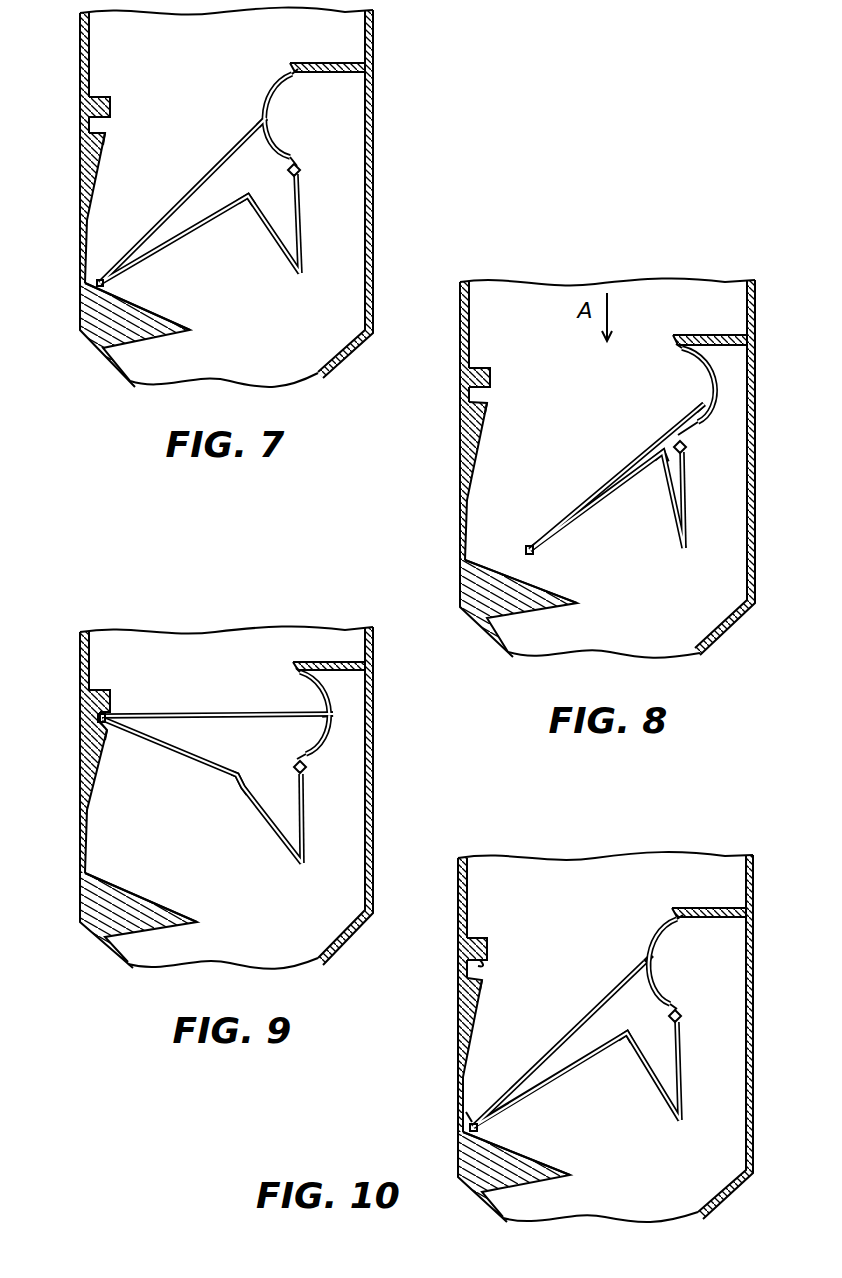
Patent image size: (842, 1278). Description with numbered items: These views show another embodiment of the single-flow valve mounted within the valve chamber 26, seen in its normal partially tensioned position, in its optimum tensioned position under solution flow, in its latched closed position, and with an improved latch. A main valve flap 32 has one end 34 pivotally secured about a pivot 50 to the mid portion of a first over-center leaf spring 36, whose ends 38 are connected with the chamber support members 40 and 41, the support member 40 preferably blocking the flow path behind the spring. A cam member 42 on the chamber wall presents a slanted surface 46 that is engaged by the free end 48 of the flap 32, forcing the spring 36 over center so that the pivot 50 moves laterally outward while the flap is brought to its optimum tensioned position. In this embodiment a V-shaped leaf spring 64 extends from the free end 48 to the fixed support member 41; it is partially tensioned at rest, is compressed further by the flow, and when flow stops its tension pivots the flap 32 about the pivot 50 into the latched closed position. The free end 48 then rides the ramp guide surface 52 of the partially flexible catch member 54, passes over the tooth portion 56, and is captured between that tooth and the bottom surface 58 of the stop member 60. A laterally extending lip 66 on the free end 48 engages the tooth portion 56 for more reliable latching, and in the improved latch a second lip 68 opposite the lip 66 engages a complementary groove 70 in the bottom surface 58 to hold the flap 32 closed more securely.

In FIG. 7, the valve chamber 26 is at (373, 130).
In FIG. 8, the valve chamber 26 is at (758, 524).
In FIG. 9, the valve chamber 26 is at (375, 827).
In FIG. 10, the valve chamber 26 is at (755, 962).
In FIG. 7, the main valve flap 32 is at (190, 166).
In FIG. 8, the main valve flap 32 is at (645, 451).
In FIG. 9, the main valve flap 32 is at (224, 765).
In FIG. 10, the main valve flap 32 is at (569, 1027).
In FIG. 7, the one end of main valve flap 34 is at (244, 137).
In FIG. 8, the one end of main valve flap 34 is at (689, 412).
In FIG. 9, the one end of main valve flap 34 is at (310, 707).
In FIG. 10, the one end of main valve flap 34 is at (627, 975).
In FIG. 7, the first over-center leaf spring 36 is at (275, 107).
In FIG. 8, the first over-center leaf spring 36 is at (718, 367).
In FIG. 9, the first over-center leaf spring 36 is at (333, 700).
In FIG. 10, the first over-center leaf spring 36 is at (655, 942).
In FIG. 7, the ends of leaf spring 38 is at (278, 82).
In FIG. 8, the ends of leaf spring 38 is at (682, 352).
In FIG. 9, the ends of leaf spring 38 is at (330, 676).
In FIG. 10, the ends of leaf spring 38 is at (669, 926).
In FIG. 7, the support member 40 is at (322, 62).
In FIG. 8, the support member 40 is at (710, 335).
In FIG. 9, the support member 40 is at (330, 662).
In FIG. 10, the support member 40 is at (709, 908).
In FIG. 7, the support member 41 is at (303, 235).
In FIG. 8, the support member 41 is at (688, 532).
In FIG. 9, the support member 41 is at (305, 840).
In FIG. 10, the support member 41 is at (684, 1077).
In FIG. 7, the cam member 42 is at (98, 313).
In FIG. 8, the cam member 42 is at (480, 597).
In FIG. 9, the cam member 42 is at (100, 905).
In FIG. 10, the cam member 42 is at (477, 1152).
In FIG. 7, the slanted surface 46 is at (155, 315).
In FIG. 8, the slanted surface 46 is at (546, 590).
In FIG. 9, the slanted surface 46 is at (153, 905).
In FIG. 10, the slanted surface 46 is at (532, 1160).
In FIG. 7, the free end of valve flap 48 is at (115, 270).
In FIG. 8, the free end of valve flap 48 is at (549, 536).
In FIG. 9, the free end of valve flap 48 is at (140, 735).
In FIG. 10, the free end of valve flap 48 is at (489, 1114).
In FIG. 7, the pivot 50 is at (262, 118).
In FIG. 8, the pivot 50 is at (718, 390).
In FIG. 9, the pivot 50 is at (335, 715).
In FIG. 10, the pivot 50 is at (653, 964).
In FIG. 7, the ramp guide surface 52 is at (98, 166).
In FIG. 8, the ramp guide surface 52 is at (478, 452).
In FIG. 9, the ramp guide surface 52 is at (94, 786).
In FIG. 10, the ramp guide surface 52 is at (476, 1008).
In FIG. 7, the catch member 54 is at (87, 165).
In FIG. 8, the catch member 54 is at (468, 445).
In FIG. 9, the catch member 54 is at (86, 765).
In FIG. 10, the catch member 54 is at (468, 996).
In FIG. 7, the tooth portion 56 is at (108, 133).
In FIG. 8, the tooth portion 56 is at (488, 402).
In FIG. 9, the tooth portion 56 is at (108, 733).
In FIG. 10, the tooth portion 56 is at (482, 979).
In FIG. 7, the bottom surface of stop member 58 is at (112, 122).
In FIG. 8, the bottom surface of stop member 58 is at (492, 392).
In FIG. 9, the bottom surface of stop member 58 is at (110, 705).
In FIG. 10, the bottom surface of stop member 58 is at (468, 962).
In FIG. 7, the stop member 60 is at (100, 97).
In FIG. 8, the stop member 60 is at (480, 368).
In FIG. 9, the stop member 60 is at (97, 690).
In FIG. 10, the stop member 60 is at (477, 938).
In FIG. 7, the V-shaped leaf spring 64 is at (270, 216).
In FIG. 8, the V-shaped leaf spring 64 is at (674, 466).
In FIG. 9, the V-shaped leaf spring 64 is at (268, 823).
In FIG. 10, the V-shaped leaf spring 64 is at (650, 1055).
In FIG. 7, the laterally extending lip 66 is at (96, 280).
In FIG. 8, the laterally extending lip 66 is at (530, 548).
In FIG. 9, the laterally extending lip 66 is at (98, 719).
In FIG. 10, the laterally extending lip 66 is at (468, 1127).
In FIG. 10, the laterally extending lip 68 is at (465, 1115).
In FIG. 10, the complementary groove 70 is at (488, 962).